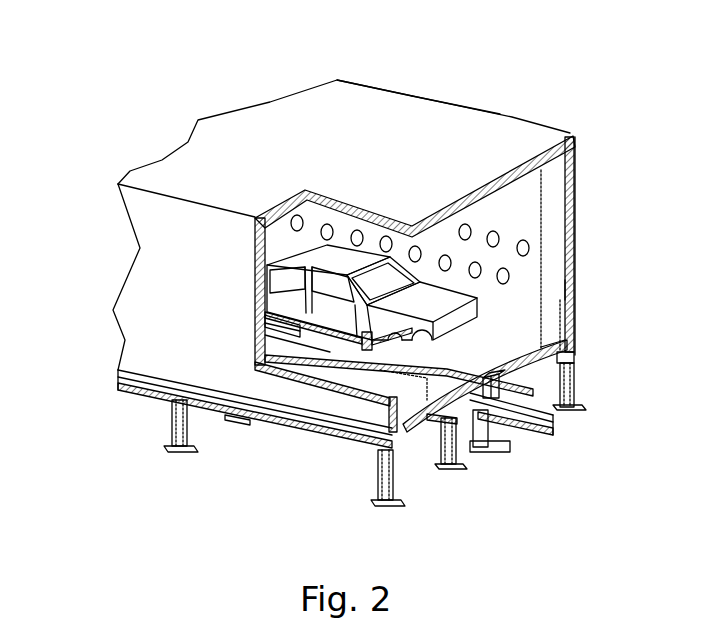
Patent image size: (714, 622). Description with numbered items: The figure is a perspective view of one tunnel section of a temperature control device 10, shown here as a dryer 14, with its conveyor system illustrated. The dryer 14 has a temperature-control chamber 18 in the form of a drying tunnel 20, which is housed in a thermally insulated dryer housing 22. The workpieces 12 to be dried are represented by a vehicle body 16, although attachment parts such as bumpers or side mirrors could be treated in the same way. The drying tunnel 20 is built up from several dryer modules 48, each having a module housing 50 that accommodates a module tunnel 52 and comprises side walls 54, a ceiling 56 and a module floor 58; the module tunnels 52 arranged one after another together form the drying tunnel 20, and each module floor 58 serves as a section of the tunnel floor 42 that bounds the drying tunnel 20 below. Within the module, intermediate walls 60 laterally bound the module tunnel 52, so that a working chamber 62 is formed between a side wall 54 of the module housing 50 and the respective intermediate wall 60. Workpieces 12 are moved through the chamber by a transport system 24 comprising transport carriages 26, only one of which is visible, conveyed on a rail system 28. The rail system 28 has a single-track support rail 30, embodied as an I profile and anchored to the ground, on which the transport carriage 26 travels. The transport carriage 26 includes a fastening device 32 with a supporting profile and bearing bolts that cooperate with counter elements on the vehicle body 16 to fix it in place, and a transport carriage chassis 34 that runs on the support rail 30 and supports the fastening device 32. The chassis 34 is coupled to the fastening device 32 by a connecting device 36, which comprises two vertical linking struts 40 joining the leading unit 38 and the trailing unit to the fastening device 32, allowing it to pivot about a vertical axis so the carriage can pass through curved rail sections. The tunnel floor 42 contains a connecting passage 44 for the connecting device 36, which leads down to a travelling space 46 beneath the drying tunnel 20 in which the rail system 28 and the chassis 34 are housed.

The temperature control device 10 is at (463, 70).
The workpieces 12 is at (328, 253).
The dryer 14 is at (597, 83).
The vehicle body 16 is at (363, 257).
The temperature-control chamber 18 is at (459, 222).
The drying tunnel 20 is at (523, 328).
The dryer housing 22 is at (222, 140).
The transport system 24 is at (517, 387).
The transport carriage 26 is at (317, 346).
The rail system 28 is at (567, 447).
The support rail 30 is at (532, 432).
The fastening device 32 is at (265, 323).
The transport carriage chassis 34 is at (463, 429).
The connecting device 36 is at (289, 311).
The leading unit 38 is at (427, 433).
The vertical linking struts 40 is at (362, 345).
The tunnel floor 42 is at (490, 358).
The connecting passage 44 is at (465, 378).
The travelling space 46 is at (256, 429).
The dryer modules 48 is at (283, 113).
The module housing 50 is at (348, 107).
The module tunnel 52 is at (504, 213).
The side walls 54 is at (577, 172).
The ceiling 56 is at (422, 123).
The module floor 58 is at (407, 433).
The intermediate walls 60 is at (546, 203).
The working chamber 62 is at (553, 292).